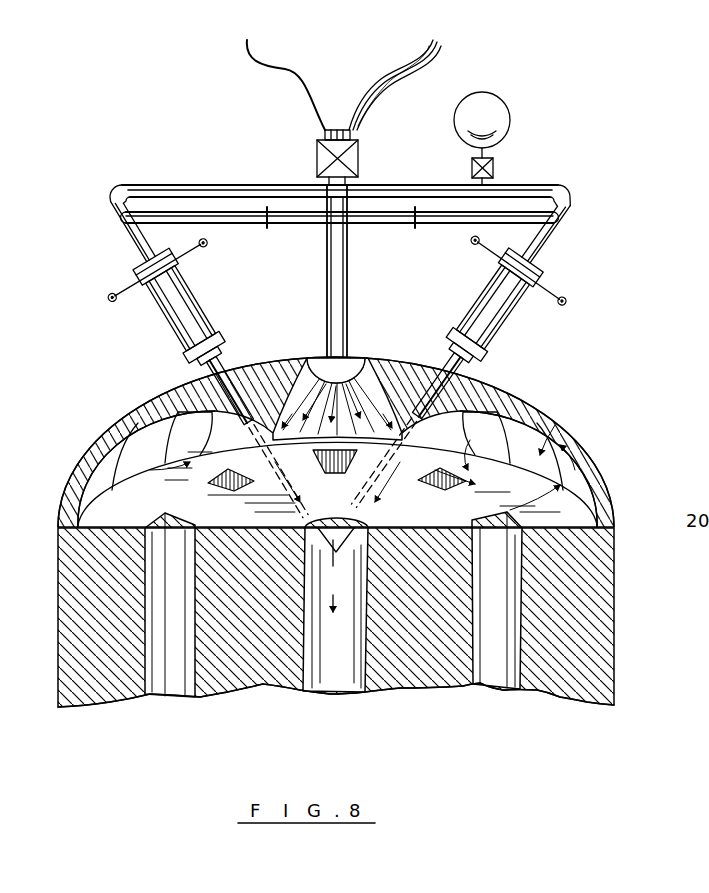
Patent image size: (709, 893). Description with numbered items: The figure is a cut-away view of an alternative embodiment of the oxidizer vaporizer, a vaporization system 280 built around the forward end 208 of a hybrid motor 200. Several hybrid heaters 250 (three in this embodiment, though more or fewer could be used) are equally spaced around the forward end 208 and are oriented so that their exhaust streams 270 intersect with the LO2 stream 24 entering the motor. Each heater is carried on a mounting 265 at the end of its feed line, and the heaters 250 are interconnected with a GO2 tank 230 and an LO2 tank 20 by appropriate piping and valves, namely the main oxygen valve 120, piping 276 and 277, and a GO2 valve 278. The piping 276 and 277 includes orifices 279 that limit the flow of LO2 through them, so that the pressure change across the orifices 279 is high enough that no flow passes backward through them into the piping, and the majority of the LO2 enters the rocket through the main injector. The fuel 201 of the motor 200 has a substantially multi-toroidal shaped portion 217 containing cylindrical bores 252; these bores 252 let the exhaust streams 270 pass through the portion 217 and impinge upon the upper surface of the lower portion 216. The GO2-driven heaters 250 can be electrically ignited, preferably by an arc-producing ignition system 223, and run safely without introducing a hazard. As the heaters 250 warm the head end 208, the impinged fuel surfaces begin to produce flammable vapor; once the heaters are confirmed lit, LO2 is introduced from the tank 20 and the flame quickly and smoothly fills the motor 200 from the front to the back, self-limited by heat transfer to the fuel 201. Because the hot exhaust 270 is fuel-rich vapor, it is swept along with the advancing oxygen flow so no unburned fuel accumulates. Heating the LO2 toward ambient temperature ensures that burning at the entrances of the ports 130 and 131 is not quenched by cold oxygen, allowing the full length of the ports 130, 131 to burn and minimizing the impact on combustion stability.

The LO2 tank 20 is at (258, 60).
The LO2 stream 24 is at (277, 368).
The main oxygen valve 120 is at (322, 135).
The port 130 is at (198, 449).
The port 131 is at (303, 522).
The motor 200 is at (90, 705).
The fuel 201 is at (98, 434).
The forward end 208 is at (528, 400).
The portion 216 is at (598, 590).
The multi-toroidal shaped portion 217 is at (157, 398).
The arc-producing ignition system 223 is at (102, 302).
The GO2 tank 230 is at (513, 118).
The hybrid heater 250 is at (210, 294).
The cylindrical bore 252 is at (240, 395).
The injector flanges 265 is at (135, 262).
The exhaust stream 270 is at (226, 470).
The piping 276 is at (173, 184).
The piping 277 is at (228, 212).
The GO2 valve 278 is at (495, 168).
The orifice 279 is at (270, 210).
The vaporization system 280 is at (626, 171).